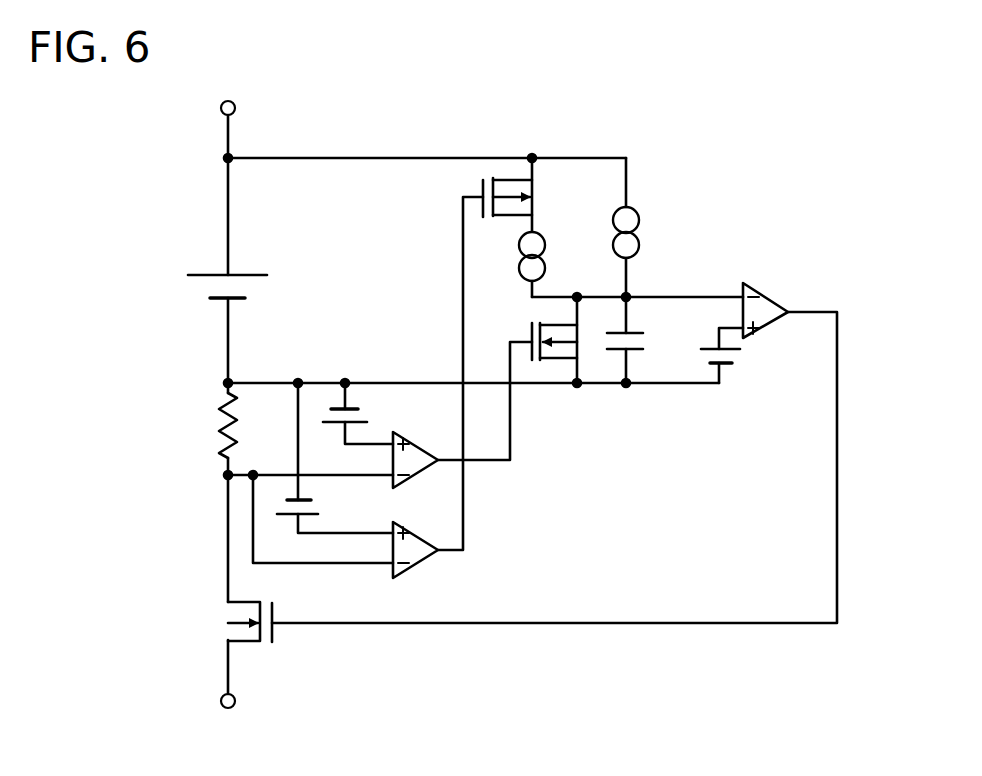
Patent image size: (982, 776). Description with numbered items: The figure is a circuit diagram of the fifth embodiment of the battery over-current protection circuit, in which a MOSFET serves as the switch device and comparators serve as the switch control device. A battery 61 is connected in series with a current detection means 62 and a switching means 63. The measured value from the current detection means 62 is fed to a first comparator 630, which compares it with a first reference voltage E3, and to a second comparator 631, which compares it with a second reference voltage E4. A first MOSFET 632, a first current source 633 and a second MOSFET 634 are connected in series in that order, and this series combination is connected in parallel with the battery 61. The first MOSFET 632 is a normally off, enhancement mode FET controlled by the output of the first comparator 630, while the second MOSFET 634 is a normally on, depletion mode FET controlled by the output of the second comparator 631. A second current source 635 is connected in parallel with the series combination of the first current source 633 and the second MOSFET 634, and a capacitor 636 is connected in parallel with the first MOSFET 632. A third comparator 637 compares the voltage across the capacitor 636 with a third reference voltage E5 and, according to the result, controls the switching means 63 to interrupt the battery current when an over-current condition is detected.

The battery 61 is at (207, 285).
The current detection means 62 is at (215, 425).
The switching means 63 is at (225, 626).
The first comparator 630 is at (412, 442).
The second comparator 631 is at (420, 563).
The first MOSFET 632 is at (522, 328).
The first current source 633 is at (547, 256).
The second MOSFET 634 is at (468, 178).
The second current source 635 is at (642, 226).
The capacitor 636 is at (640, 340).
The third comparator 637 is at (777, 293).
The first reference voltage E3 is at (362, 413).
The second reference voltage E4 is at (318, 506).
The third reference voltage E5 is at (735, 358).